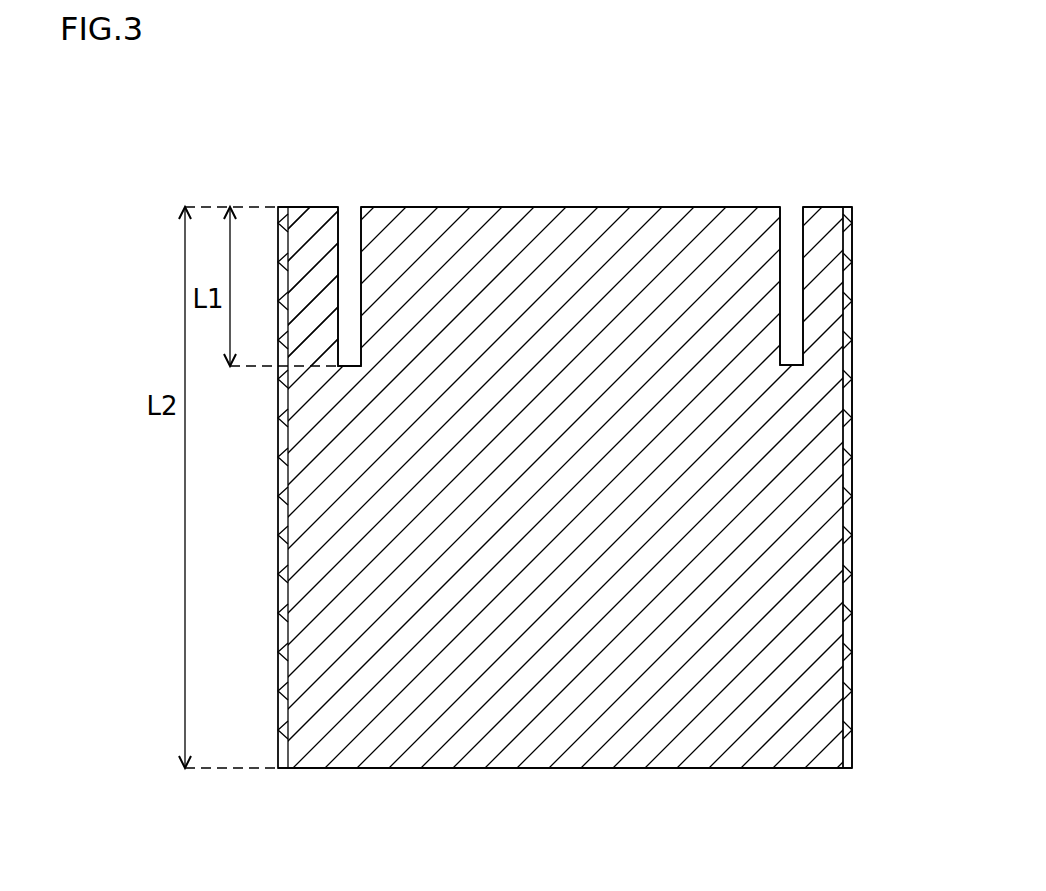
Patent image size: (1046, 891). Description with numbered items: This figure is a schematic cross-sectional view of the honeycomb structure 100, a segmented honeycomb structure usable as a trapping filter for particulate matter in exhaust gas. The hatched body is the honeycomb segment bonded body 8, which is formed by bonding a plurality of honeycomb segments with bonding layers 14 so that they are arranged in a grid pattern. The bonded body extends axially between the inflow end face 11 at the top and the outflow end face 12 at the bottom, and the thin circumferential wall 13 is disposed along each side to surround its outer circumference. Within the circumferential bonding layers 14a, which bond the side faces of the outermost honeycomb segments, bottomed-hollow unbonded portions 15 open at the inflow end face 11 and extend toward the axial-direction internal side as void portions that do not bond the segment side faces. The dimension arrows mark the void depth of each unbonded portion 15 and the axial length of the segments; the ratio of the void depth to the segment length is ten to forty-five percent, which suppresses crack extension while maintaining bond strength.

The honeycomb structure 100 is at (885, 98).
The honeycomb segment bonded body 8 is at (838, 193).
The inflow end face 11 is at (337, 163).
The outflow end face 12 is at (332, 790).
The circumferential wall 13 is at (848, 410).
The bonding layer 14 is at (498, 305).
The circumferential bonding layer 14a is at (322, 273).
The unbonded portion 15 is at (343, 270).